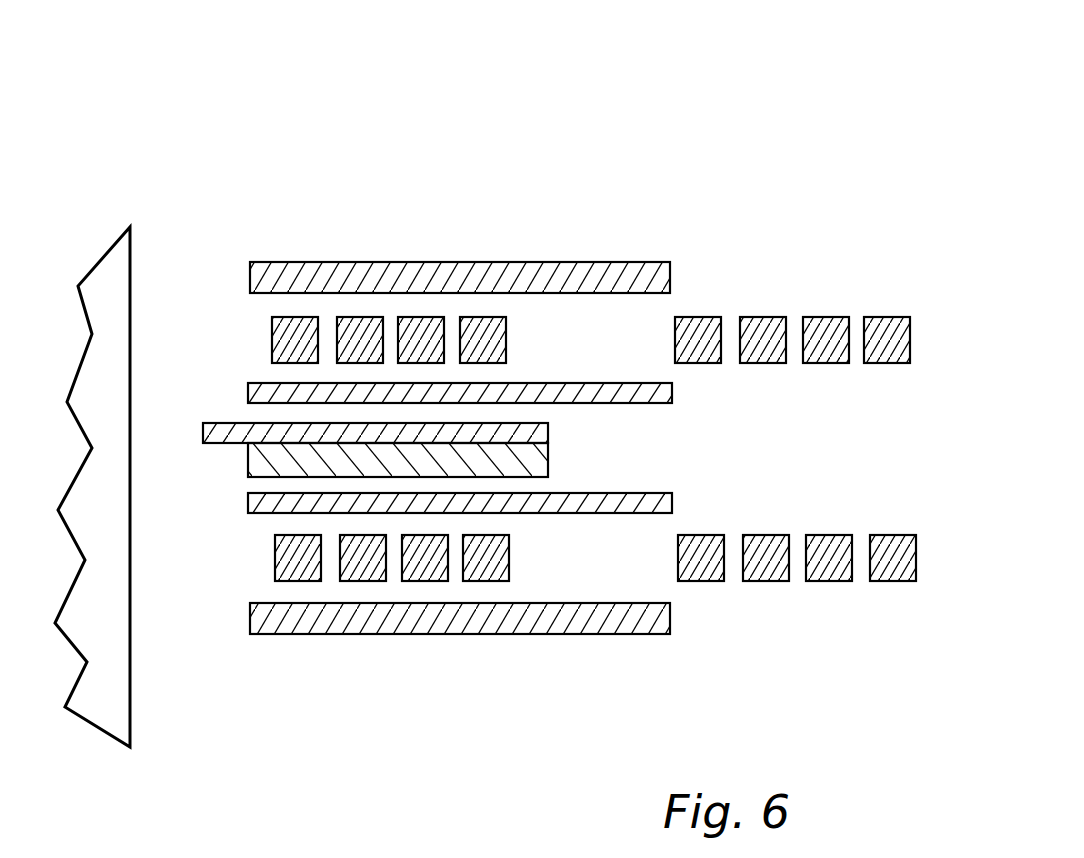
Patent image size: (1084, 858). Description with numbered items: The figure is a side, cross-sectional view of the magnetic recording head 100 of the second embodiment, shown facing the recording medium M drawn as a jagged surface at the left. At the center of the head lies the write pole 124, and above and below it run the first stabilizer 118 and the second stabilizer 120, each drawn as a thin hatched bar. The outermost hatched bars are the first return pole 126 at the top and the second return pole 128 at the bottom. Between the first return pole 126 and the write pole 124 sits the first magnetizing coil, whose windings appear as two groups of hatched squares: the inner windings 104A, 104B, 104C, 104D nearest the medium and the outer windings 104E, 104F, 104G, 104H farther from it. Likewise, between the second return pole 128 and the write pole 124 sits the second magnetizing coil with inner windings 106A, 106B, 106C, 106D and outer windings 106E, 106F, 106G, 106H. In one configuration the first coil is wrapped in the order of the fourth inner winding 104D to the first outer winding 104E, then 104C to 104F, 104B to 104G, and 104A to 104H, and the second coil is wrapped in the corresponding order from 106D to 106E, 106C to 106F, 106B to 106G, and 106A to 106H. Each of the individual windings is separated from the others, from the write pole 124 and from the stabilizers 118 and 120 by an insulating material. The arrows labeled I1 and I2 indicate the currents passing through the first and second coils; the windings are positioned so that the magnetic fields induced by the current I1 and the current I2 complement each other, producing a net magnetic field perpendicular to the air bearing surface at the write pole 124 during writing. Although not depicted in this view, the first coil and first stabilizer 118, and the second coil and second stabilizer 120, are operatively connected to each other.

The magnetic recording head 100 is at (592, 118).
The mirror / reflective surface M is at (96, 508).
The current through first magnetizing coil I1 is at (268, 333).
The current through second magnetizing coil I2 is at (270, 562).
The inner winding of first magnetizing coil 104A is at (297, 317).
The inner winding of first magnetizing coil 104B is at (355, 317).
The inner winding of first magnetizing coil 104C is at (425, 317).
The inner winding of first magnetizing coil 104D is at (487, 317).
The outer winding of first magnetizing coil 104E is at (700, 317).
The outer winding of first magnetizing coil 104F is at (765, 317).
The outer winding of first magnetizing coil 104G is at (830, 317).
The outer winding of first magnetizing coil 104H is at (890, 317).
The inner winding of second magnetizing coil 106A is at (290, 581).
The inner winding of second magnetizing coil 106B is at (360, 581).
The inner winding of second magnetizing coil 106C is at (422, 581).
The inner winding of second magnetizing coil 106D is at (487, 581).
The outer winding of second magnetizing coil 106E is at (702, 581).
The outer winding of second magnetizing coil 106F is at (767, 581).
The outer winding of second magnetizing coil 106G is at (830, 581).
The outer winding of second magnetizing coil 106H is at (893, 581).
The first stabilizer 118 is at (672, 392).
The second stabilizer 120 is at (672, 502).
The write pole 124 is at (226, 422).
The first return pole 126 is at (567, 262).
The second return pole 128 is at (567, 634).